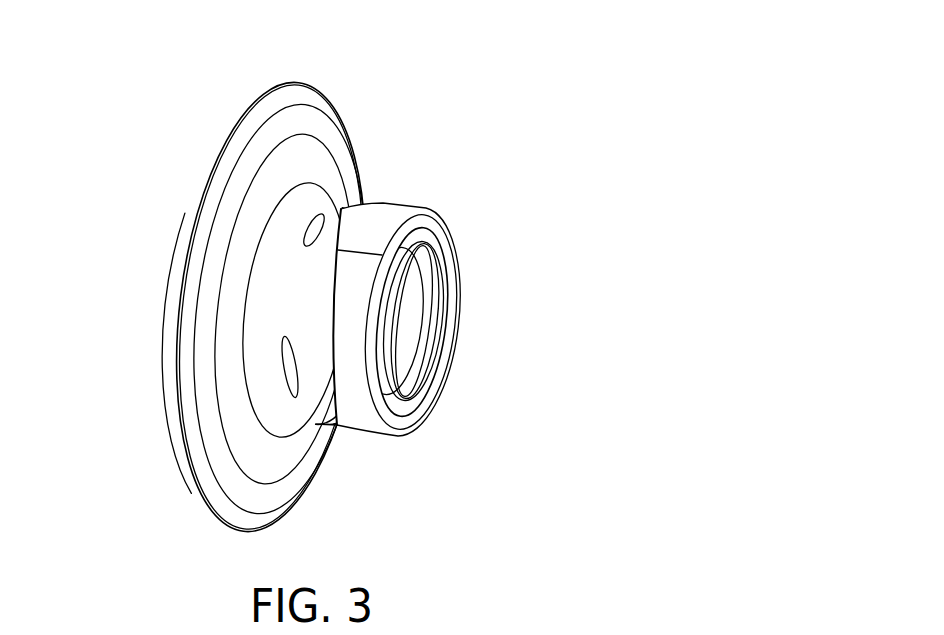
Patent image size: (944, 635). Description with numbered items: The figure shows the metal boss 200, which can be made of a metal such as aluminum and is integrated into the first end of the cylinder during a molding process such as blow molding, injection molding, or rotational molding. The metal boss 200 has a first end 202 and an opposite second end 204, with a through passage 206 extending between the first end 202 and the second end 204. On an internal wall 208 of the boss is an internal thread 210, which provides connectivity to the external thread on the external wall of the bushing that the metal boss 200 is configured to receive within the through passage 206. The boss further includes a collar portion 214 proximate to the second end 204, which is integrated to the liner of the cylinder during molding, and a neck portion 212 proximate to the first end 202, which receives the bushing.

The metal boss 200 is at (537, 63).
The first end 202 is at (383, 203).
The second end 204 is at (166, 290).
The through passage 206 is at (393, 330).
The internal wall 208 is at (425, 347).
The internal thread 210 is at (393, 393).
The neck portion 212 is at (391, 204).
The collar portion 214 is at (350, 150).